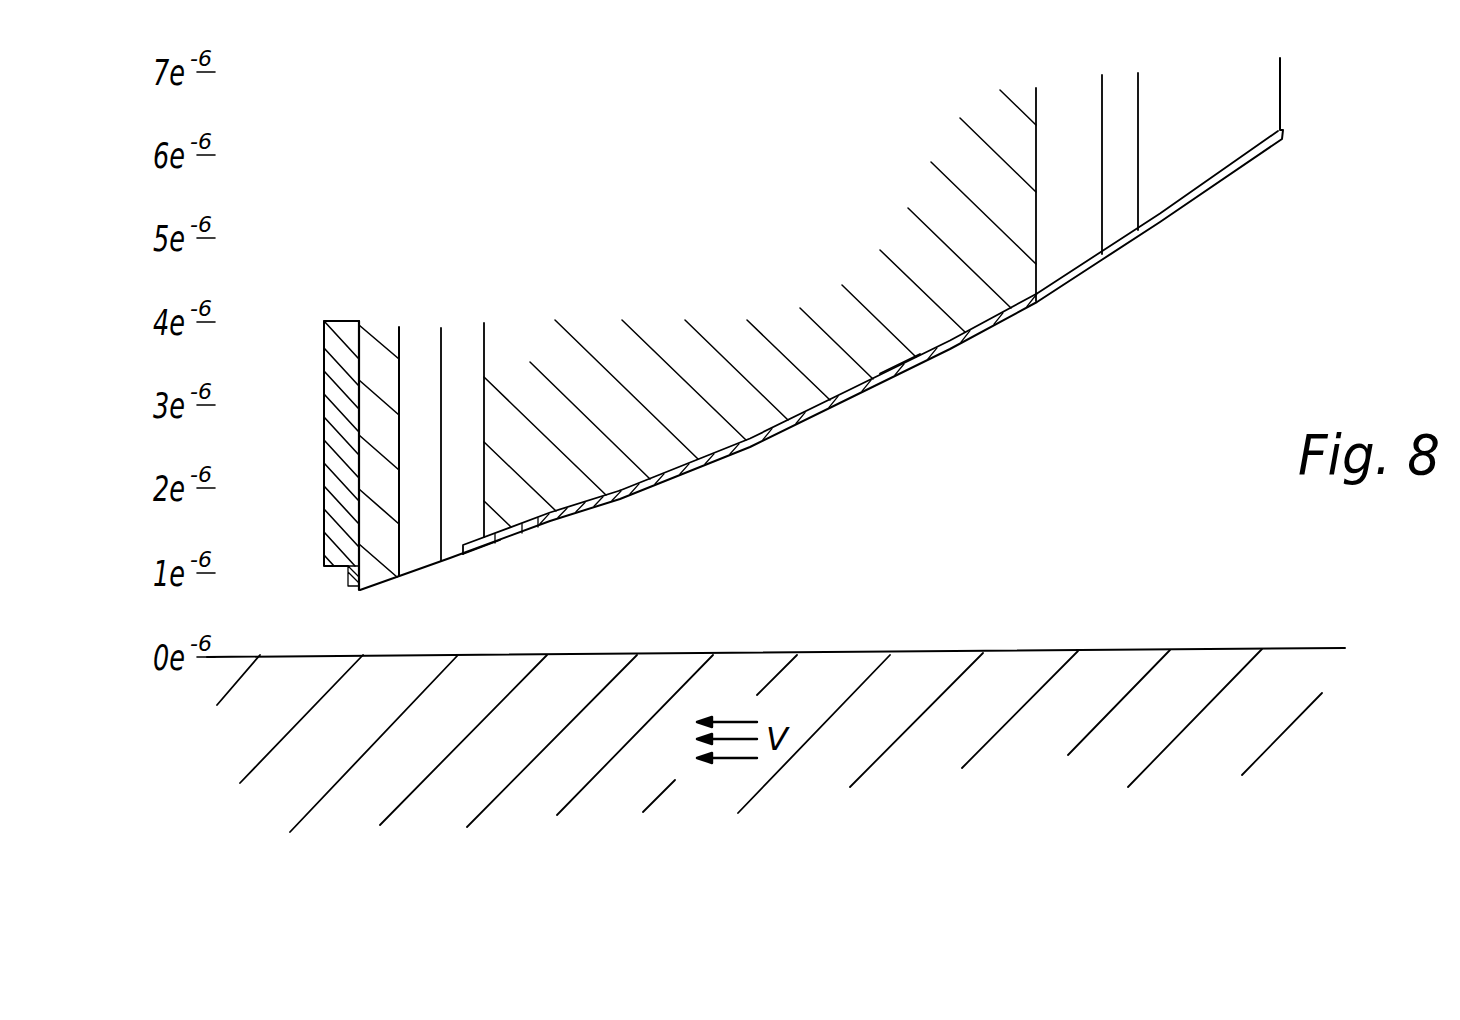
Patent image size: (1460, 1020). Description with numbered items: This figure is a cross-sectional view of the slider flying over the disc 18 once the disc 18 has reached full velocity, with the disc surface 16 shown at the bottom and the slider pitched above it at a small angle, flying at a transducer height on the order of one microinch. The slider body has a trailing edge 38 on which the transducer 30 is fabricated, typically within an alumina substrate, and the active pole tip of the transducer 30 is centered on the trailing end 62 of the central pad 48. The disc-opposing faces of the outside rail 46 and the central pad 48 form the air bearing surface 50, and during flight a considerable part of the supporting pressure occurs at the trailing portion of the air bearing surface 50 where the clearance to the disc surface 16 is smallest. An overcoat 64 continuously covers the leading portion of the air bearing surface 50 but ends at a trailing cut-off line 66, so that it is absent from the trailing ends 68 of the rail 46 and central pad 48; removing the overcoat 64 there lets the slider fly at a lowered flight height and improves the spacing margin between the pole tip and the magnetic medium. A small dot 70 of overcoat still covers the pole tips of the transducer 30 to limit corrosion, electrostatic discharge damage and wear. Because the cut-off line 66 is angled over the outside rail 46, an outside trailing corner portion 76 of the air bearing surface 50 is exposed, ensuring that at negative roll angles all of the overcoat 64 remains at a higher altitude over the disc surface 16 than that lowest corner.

The disc surface 16 is at (1108, 648).
The disc 18 is at (850, 717).
The transducer 30 is at (335, 366).
The trailing edge 38 is at (357, 431).
The outside rail 46 is at (730, 352).
The central pad 48 is at (384, 330).
The air bearing surface 50 is at (905, 369).
The trailing end 62 is at (362, 591).
The overcoat 64 is at (985, 336).
The trailing cut-off line 66 is at (602, 503).
The trailing end of the air bearing surface 68 is at (540, 537).
The overcoat dot 70 is at (346, 578).
The outside trailing corner portion 76 is at (494, 550).